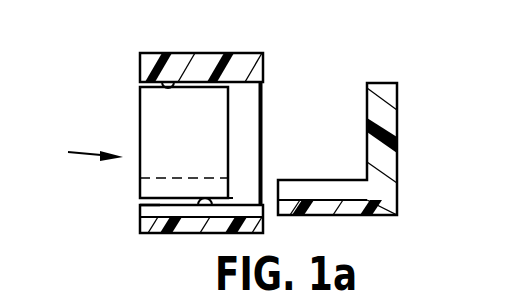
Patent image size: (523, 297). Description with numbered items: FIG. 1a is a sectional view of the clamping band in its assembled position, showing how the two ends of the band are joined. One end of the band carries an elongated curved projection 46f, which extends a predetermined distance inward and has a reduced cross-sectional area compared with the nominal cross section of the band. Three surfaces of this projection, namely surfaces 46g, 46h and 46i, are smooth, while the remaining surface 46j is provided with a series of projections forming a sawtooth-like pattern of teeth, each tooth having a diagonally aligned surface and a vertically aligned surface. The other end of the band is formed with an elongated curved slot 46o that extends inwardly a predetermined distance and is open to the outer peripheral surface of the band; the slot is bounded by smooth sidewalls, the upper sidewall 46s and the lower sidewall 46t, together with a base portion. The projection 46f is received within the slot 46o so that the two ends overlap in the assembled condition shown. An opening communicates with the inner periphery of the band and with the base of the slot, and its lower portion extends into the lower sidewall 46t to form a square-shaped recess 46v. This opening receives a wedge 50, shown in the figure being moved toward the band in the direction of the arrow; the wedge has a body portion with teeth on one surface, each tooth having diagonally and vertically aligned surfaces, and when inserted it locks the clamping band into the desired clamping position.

The upper sidewall 46s is at (157, 82).
The smooth surface of projection 46g is at (195, 86).
The smooth surface of projection 46i is at (140, 140).
The elongated curved projection 46f is at (77, 154).
The elongated curved slot 46o is at (140, 220).
The remaining surface of projection 46j is at (160, 204).
The lower sidewall 46t is at (199, 204).
The smooth surface of projection 46h is at (230, 140).
The square-shaped recess 46v is at (240, 217).
The wedge 50 is at (397, 167).